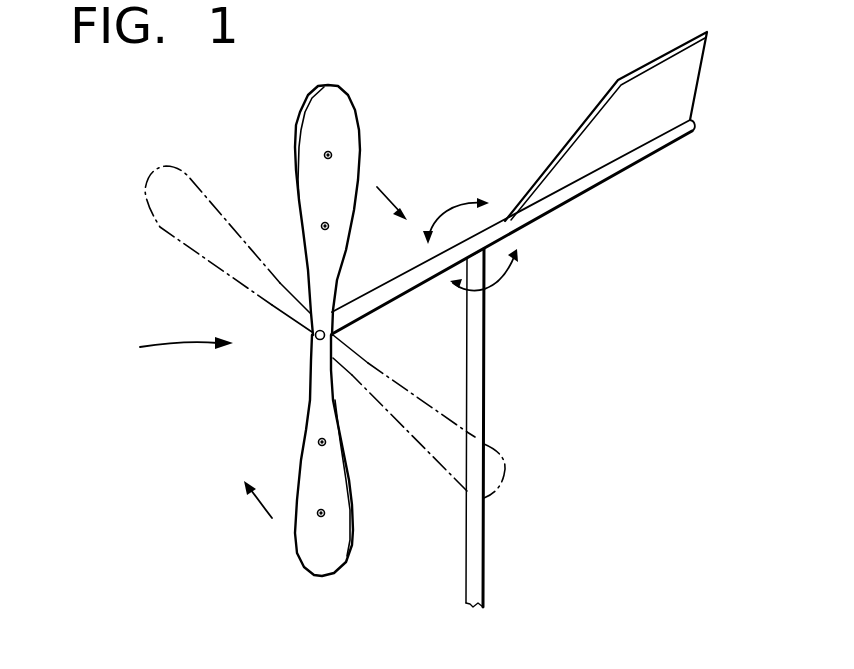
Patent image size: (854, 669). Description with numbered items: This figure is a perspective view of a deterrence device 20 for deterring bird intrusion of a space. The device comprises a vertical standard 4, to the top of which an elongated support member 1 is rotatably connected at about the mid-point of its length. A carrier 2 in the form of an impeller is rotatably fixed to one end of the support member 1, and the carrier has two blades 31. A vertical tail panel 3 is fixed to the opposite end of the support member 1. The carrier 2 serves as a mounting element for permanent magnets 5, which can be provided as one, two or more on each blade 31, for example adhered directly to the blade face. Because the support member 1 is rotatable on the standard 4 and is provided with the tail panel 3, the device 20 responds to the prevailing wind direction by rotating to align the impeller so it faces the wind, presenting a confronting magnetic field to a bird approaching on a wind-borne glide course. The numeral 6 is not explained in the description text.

The elongated support member 1 is at (519, 224).
The carrier 2 is at (295, 130).
The vertical tail panel 3 is at (613, 147).
The vertical standard 4 is at (482, 353).
The permanent magnets 5 is at (324, 156).
The pivot 6 is at (475, 239).
The deterrence device 20 is at (159, 333).
The blades 31 is at (350, 159).